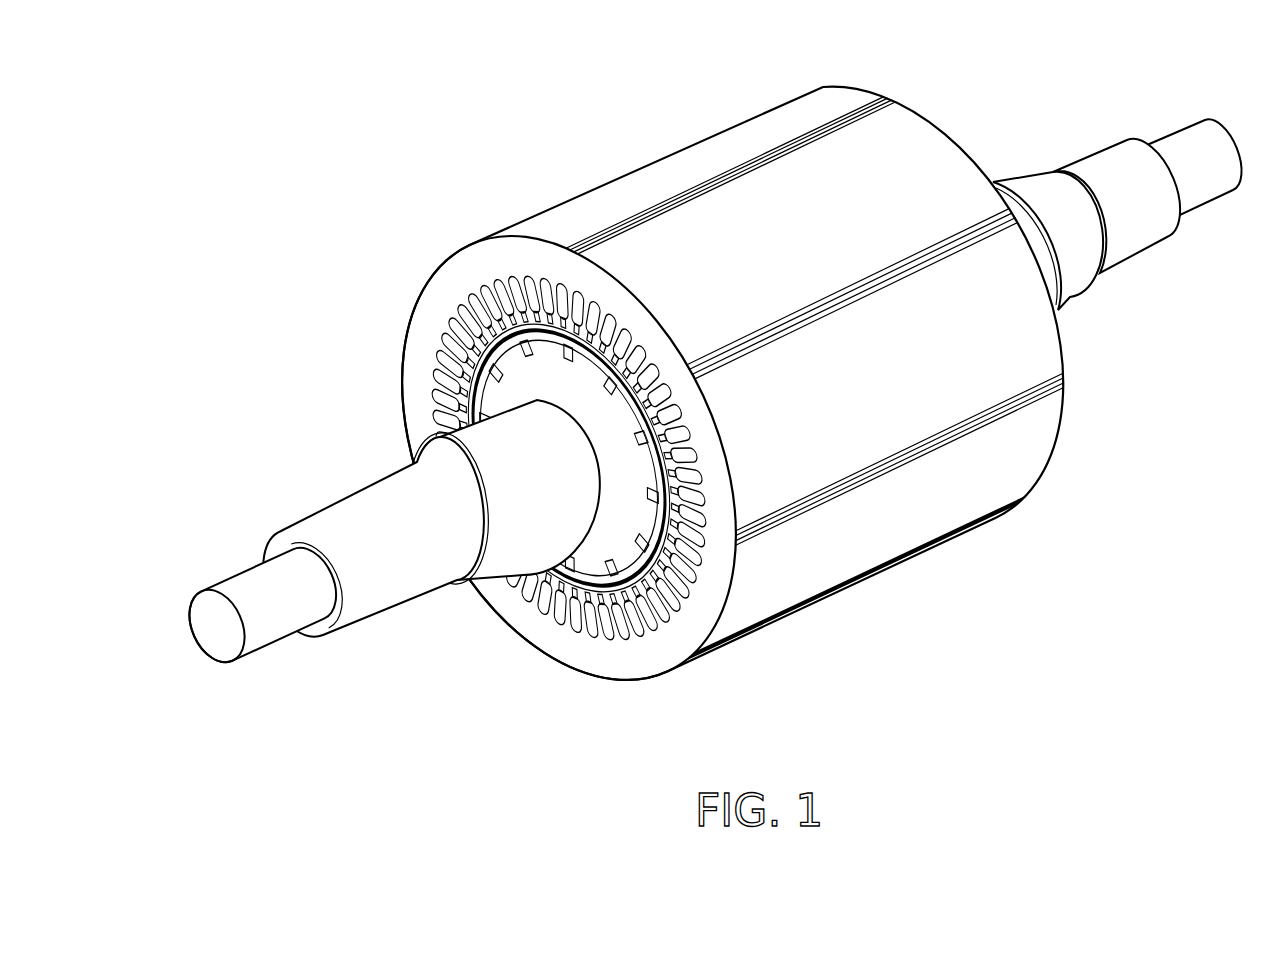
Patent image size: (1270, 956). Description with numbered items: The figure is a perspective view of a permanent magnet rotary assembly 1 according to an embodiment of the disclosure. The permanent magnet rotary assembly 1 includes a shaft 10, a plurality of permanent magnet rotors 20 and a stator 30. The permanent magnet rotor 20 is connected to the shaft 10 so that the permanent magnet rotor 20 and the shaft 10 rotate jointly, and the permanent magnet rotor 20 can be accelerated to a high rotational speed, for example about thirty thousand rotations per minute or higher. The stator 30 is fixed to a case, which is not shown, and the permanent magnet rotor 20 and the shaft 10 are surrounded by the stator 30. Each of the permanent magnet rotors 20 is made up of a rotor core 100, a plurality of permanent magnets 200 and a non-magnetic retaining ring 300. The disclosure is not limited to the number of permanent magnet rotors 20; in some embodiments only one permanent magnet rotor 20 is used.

The permanent magnet rotary assembly 1 is at (287, 99).
The shaft 10 is at (360, 522).
The permanent magnet rotor 20 is at (645, 767).
The stator 30 is at (493, 258).
The rotor core 100 is at (615, 605).
The permanent magnets 200 is at (552, 622).
The non-magnetic retaining ring 300 is at (655, 620).